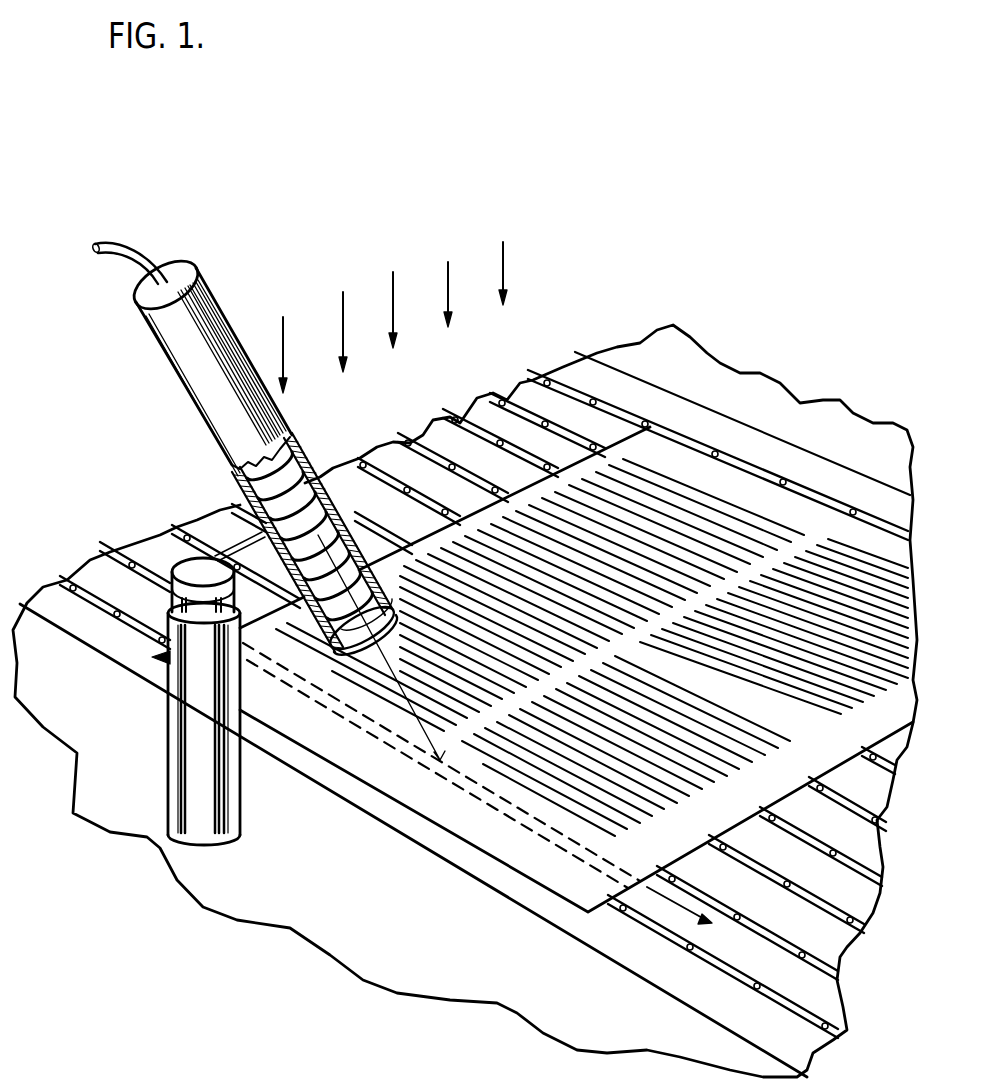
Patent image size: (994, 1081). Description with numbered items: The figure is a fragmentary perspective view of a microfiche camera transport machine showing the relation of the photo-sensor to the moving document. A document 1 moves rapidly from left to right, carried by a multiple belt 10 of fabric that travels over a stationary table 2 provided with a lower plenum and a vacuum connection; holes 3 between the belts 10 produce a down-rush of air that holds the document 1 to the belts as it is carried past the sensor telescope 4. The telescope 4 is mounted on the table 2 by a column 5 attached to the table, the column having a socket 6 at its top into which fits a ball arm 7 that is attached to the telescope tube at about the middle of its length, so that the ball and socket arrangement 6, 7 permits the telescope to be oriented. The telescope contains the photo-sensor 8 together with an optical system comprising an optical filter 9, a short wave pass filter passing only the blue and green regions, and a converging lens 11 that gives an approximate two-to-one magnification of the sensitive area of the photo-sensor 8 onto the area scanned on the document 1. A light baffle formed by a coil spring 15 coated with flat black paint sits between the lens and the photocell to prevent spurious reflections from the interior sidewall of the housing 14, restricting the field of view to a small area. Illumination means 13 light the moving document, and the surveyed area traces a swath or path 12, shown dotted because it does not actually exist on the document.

The document 1 is at (683, 846).
The stationary table 2 is at (698, 391).
The holes 3 is at (387, 540).
The sensor telescope 4 is at (293, 440).
The column 5 is at (170, 753).
The socket 6 is at (206, 597).
The ball arm 7 is at (255, 548).
The photo-sensor 8 is at (288, 478).
The optical filter 9 is at (393, 607).
The multiple belt 10 is at (501, 485).
The converging lens 11 is at (389, 596).
The path 12 is at (527, 820).
The means to illuminate 13 is at (474, 289).
The housing 14 is at (133, 263).
The coil spring 15 is at (317, 600).